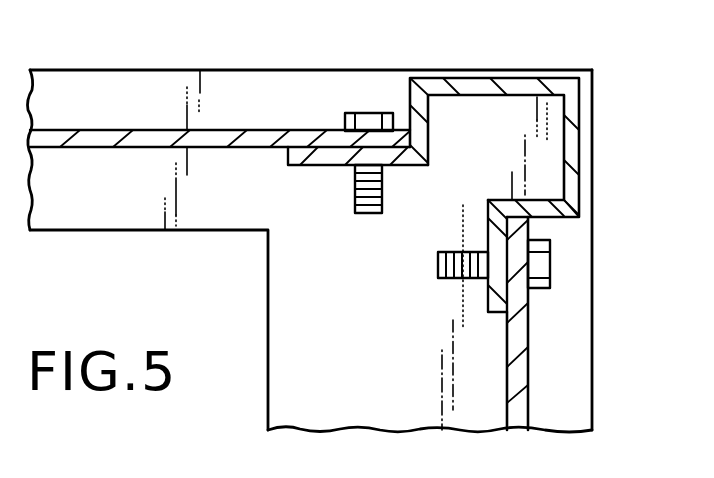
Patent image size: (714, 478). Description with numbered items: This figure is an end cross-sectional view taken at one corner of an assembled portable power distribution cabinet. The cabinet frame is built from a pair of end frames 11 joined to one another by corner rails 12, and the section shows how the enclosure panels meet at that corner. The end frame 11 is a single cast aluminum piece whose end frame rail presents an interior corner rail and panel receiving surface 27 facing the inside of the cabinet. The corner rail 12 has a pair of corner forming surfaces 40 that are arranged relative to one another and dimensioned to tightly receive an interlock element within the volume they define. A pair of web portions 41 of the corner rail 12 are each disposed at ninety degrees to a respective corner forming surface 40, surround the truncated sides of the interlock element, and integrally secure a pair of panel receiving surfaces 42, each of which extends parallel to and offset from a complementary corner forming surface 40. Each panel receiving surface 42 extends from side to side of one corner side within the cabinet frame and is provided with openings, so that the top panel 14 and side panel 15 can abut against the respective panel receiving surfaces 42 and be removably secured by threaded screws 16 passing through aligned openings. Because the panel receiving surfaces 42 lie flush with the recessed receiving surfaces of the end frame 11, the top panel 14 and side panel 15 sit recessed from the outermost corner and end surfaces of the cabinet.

The end frame 11 is at (594, 311).
The corner rail 12 is at (610, 136).
The top panel 14 is at (257, 128).
The side panel 15 is at (529, 372).
The threaded screw 16 is at (352, 113).
The corner rail and panel receiving surface 27 is at (120, 83).
The corner forming surface 40 is at (470, 79).
The web portion 41 is at (411, 90).
The panel receiving surface 42 is at (337, 167).